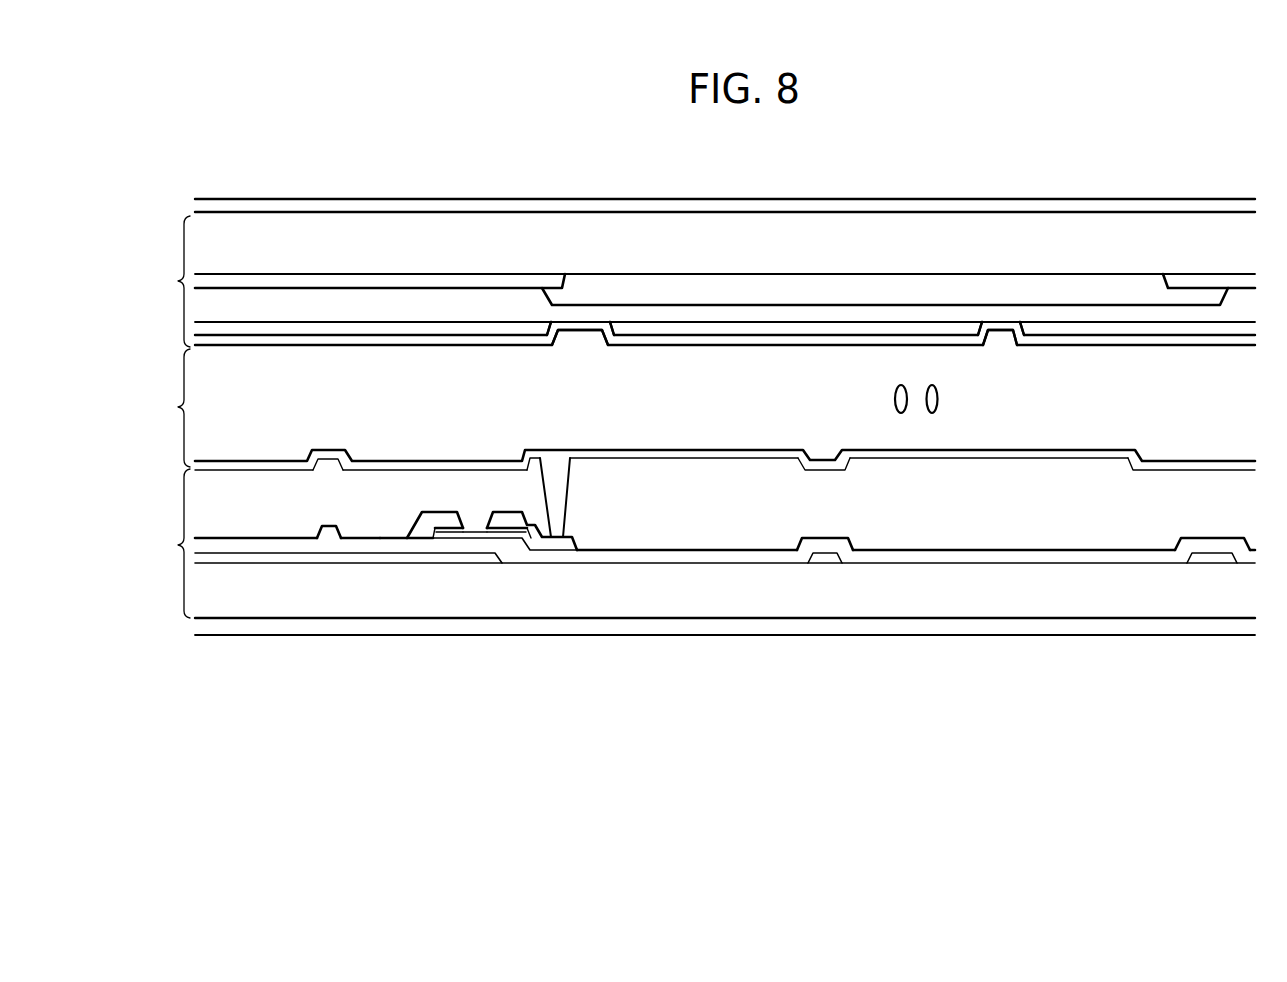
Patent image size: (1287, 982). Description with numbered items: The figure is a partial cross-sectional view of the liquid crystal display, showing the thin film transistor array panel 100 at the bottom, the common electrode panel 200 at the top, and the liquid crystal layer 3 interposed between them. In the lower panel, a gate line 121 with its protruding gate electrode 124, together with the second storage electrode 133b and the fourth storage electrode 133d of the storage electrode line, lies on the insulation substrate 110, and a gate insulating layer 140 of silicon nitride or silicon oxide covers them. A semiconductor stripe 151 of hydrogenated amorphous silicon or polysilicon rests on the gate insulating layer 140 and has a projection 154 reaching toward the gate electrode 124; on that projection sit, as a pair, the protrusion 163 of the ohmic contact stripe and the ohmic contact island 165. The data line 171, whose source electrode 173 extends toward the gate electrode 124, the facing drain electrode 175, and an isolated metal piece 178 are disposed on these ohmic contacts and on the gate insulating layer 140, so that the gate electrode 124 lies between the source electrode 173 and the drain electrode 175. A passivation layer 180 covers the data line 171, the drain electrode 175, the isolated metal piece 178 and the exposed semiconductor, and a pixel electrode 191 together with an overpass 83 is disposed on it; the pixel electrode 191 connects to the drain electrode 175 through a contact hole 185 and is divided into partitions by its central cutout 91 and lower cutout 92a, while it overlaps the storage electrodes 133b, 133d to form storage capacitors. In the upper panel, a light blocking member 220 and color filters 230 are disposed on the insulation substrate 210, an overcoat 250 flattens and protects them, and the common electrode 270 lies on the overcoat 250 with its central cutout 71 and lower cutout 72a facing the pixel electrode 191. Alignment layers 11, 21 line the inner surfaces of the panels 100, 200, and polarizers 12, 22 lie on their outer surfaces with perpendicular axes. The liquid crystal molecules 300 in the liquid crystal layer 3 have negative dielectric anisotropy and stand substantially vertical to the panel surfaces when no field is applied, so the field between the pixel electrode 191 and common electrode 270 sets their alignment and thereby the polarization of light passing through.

The liquid crystal layer 3 is at (175, 408).
The alignment layer 11 is at (234, 463).
The polarizer 12 is at (194, 629).
The alignment layer 21 is at (232, 340).
The polarizer 22 is at (194, 206).
The central cutout 71 is at (990, 342).
The lower cutout 72a is at (555, 332).
The overpass 83 is at (325, 465).
The central cutout 91 is at (1143, 457).
The lower cutout 92a is at (817, 457).
The thin film transistor array panel 100 is at (163, 543).
The insulation substrate 110 is at (952, 598).
The gate line 121 is at (252, 560).
The gate electrode 124 is at (488, 567).
The second storage electrode 133b is at (1208, 560).
The fourth storage electrode 133d is at (823, 558).
The gate insulating layer 140 is at (882, 558).
The semiconductor stripe 151 is at (441, 533).
The projection 154 is at (482, 535).
The protrusion 163 is at (450, 531).
The ohmic contact island 165 is at (502, 529).
The data line 171 is at (418, 528).
The source electrode 173 is at (443, 516).
The drain electrode 175 is at (560, 545).
The isolated metal piece 178 is at (332, 537).
The passivation layer 180 is at (740, 515).
The contact hole 185 is at (558, 474).
The pixel electrode 191 is at (674, 464).
The common electrode panel 200 is at (163, 281).
The insulation substrate 210 is at (670, 228).
The light blocking member 220 is at (452, 278).
The color filter 230 is at (860, 285).
The overcoat 250 is at (768, 313).
The common electrode 270 is at (938, 330).
The liquid crystal molecule 300 is at (895, 396).